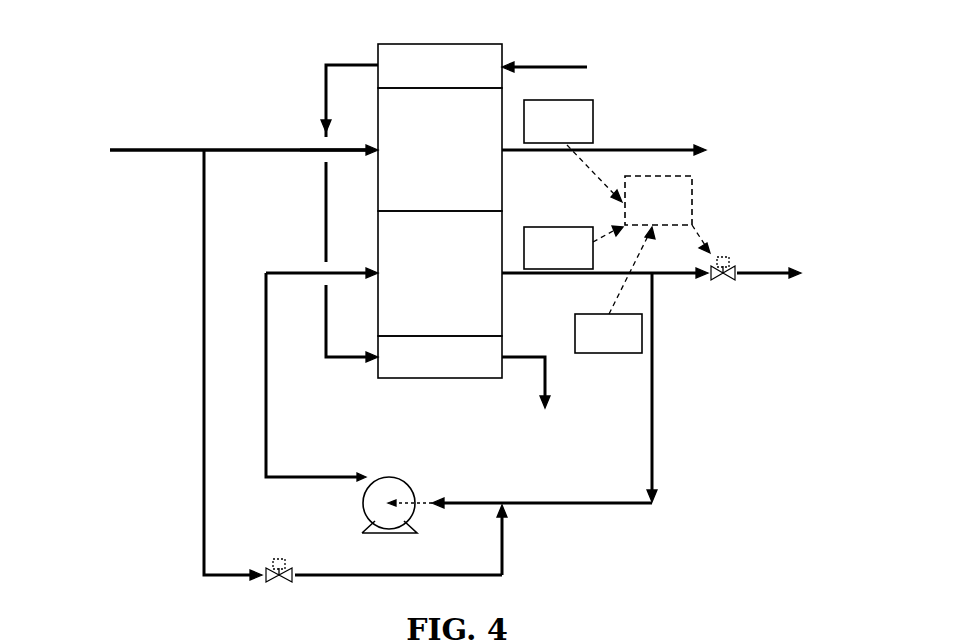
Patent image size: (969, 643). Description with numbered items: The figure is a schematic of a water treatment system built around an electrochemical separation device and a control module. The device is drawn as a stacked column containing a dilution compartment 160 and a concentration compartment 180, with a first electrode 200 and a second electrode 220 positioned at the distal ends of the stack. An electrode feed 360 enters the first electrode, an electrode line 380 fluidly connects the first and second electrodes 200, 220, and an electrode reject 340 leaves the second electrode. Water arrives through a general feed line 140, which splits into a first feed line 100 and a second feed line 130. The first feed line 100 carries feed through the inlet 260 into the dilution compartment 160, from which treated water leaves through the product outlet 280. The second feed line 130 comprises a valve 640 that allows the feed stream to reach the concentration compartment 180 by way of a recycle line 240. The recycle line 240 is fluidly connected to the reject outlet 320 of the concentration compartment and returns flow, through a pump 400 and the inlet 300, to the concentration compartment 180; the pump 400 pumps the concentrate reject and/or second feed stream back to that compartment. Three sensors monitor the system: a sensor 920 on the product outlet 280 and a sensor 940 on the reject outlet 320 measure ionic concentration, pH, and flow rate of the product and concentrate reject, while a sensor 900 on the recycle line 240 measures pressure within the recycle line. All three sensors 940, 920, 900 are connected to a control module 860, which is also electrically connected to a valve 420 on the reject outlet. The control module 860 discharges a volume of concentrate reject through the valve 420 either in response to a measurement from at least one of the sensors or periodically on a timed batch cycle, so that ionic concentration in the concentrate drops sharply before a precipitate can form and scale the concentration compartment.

The first feed line 100 is at (240, 150).
The second feed line upstream end 130 is at (204, 265).
The general feed line 140 is at (214, 152).
The dilution compartment 160 is at (440, 149).
The concentration compartment 180 is at (440, 273).
The first electrode 200 is at (440, 66).
The second electrode 220 is at (440, 357).
The recycle line 240 is at (652, 458).
The dilution compartment inlet 260 is at (378, 150).
The product outlet 280 is at (633, 152).
The concentration compartment inlet 300 is at (378, 273).
The reject outlet 320 is at (678, 271).
The electrode reject 340 is at (527, 400).
The electrode feed 360 is at (572, 67).
The electrode line 380 is at (338, 64).
The pump 400 is at (405, 482).
The valve 420 is at (724, 277).
The valve 640 is at (279, 577).
The control module 860 is at (667, 214).
The recycle line sensor 900 is at (615, 290).
The product outlet sensor 920 is at (573, 151).
The reject outlet sensor 940 is at (573, 247).